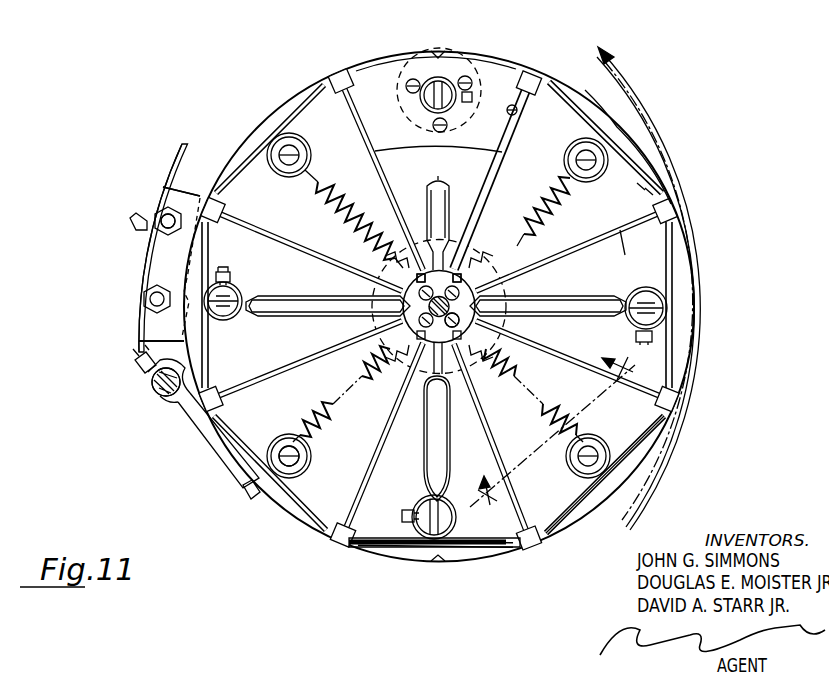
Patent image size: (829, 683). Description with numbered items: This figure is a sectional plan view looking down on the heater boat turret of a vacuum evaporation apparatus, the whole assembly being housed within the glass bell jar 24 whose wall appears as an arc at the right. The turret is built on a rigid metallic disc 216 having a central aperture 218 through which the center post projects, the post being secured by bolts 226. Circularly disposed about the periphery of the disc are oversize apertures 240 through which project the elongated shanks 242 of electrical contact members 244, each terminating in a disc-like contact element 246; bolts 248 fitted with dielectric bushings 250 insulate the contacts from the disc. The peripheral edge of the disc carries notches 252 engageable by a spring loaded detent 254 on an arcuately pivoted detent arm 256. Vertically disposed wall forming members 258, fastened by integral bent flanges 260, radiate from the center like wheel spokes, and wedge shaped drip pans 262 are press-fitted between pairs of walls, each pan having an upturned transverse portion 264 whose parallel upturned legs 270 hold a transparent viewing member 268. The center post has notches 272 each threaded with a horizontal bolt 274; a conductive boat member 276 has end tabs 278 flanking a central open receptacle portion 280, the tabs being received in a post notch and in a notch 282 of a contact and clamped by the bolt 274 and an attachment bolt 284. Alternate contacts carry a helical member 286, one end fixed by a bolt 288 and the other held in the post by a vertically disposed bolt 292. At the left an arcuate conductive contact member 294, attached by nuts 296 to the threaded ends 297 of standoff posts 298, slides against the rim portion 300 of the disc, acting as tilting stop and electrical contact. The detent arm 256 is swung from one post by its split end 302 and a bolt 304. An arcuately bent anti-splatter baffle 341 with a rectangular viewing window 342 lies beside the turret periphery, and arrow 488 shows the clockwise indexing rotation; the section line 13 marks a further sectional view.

The section line 13- 13 is at (552, 423).
The glass bell jar 24 is at (622, 72).
The rigid metallic disc 216 is at (352, 70).
The central aperture 218 is at (497, 326).
The bolts 226 is at (473, 268).
The apertures 240 is at (280, 173).
The elongated shanks 242 is at (300, 141).
The electrical contact members 244 is at (420, 503).
The disc-like electrical contact element 246 is at (458, 66).
The bolts 248 is at (410, 78).
The dielectric bushings 250 is at (463, 73).
The notches 252 is at (440, 567).
The spring loaded detent 254 is at (246, 497).
The detent arm 256 is at (202, 455).
The wall forming members 258 is at (627, 232).
The integral bent flanges 260 is at (523, 87).
The wedge shaped drip pans 262 is at (275, 426).
The upturned transverse portion 264 is at (477, 550).
The transparent viewing members 268 is at (680, 258).
The parallel upturned legs 270 is at (650, 198).
The notches 272 is at (505, 297).
The bolt 274 is at (463, 267).
The conductive boat member 276 is at (284, 290).
The end tabs 278 is at (345, 290).
The central open receptacle portion 280 is at (287, 316).
The notch 282 is at (667, 312).
The attachment bolt 284 is at (652, 340).
The helical member 286 is at (338, 180).
The bolt 288 is at (292, 468).
The vertically disposed bolt 292 is at (418, 202).
The arcuate conductive contact member 294 is at (152, 258).
The nuts 296 is at (147, 212).
The threaded ends 297 is at (167, 213).
The standoff posts 298 is at (156, 390).
The rim portion 300 is at (607, 110).
The split end 302 is at (152, 392).
The bolt 304 is at (136, 366).
The anti-splatter baffle 341 is at (178, 148).
The viewing window 342 is at (140, 336).
The arrow 488 is at (262, 86).